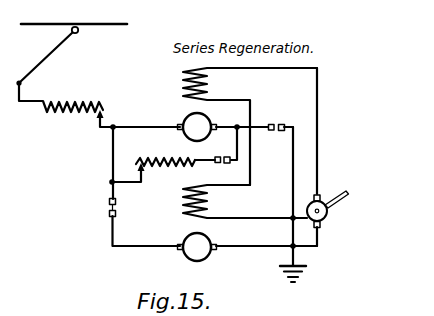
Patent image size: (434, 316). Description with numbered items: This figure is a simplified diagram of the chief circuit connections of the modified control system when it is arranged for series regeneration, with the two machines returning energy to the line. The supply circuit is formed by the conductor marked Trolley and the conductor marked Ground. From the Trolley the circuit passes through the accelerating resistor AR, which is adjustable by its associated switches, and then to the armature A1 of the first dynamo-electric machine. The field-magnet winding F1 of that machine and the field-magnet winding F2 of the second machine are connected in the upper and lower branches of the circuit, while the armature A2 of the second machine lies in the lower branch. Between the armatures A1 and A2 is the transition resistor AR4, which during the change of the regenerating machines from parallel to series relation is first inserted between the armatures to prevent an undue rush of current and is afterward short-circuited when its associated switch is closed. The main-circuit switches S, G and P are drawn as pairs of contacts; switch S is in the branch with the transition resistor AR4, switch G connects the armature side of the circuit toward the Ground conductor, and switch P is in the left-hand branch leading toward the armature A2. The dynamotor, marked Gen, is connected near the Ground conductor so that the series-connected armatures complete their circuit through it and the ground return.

The trolley supply-circuit conductor Trolley is at (80, 32).
The accelerating resistor AR is at (63, 104).
The transition resistor AR4 is at (176, 162).
The armature of first dynamo-electric machine A1 is at (197, 127).
The armature of second dynamo-electric machine A2 is at (197, 247).
The field-magnet winding of first machine F1 is at (210, 87).
The field-magnet winding of second machine F2 is at (210, 204).
The main-circuit switch S is at (222, 164).
The main-circuit switch G is at (272, 124).
The main-circuit switch P is at (107, 209).
The generator (dynamotor) Gen is at (327, 221).
The ground supply-circuit conductor Ground is at (300, 282).